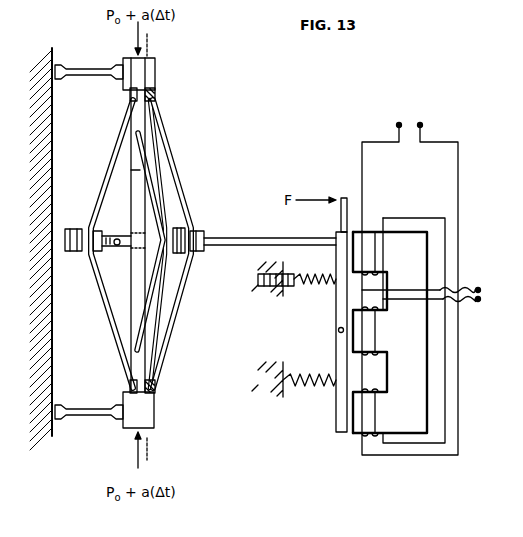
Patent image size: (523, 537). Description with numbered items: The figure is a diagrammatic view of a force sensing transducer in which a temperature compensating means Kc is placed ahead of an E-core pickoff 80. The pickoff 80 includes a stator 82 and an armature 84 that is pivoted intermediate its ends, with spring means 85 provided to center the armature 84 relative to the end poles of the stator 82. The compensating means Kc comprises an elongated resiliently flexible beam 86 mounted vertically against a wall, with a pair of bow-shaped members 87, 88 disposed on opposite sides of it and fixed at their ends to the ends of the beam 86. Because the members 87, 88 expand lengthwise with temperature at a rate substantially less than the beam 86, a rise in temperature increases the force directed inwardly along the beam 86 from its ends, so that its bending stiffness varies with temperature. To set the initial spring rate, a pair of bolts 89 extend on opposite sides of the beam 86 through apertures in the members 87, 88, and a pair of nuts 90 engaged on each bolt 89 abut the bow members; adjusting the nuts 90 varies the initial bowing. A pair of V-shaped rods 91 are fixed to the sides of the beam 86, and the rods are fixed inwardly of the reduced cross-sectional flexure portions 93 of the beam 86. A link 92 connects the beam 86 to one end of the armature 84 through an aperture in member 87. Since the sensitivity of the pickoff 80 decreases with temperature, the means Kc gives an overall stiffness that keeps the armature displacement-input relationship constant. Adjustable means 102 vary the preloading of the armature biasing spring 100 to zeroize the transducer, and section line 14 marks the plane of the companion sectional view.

The section line 14- 14 is at (152, 45).
The E-core pickoff 80 is at (326, 321).
The stator 82 is at (427, 274).
The armature 84 is at (336, 355).
The spring means 85 is at (322, 394).
The beam 86 is at (148, 126).
The bow-shaped member 87 is at (171, 322).
The bow-shaped member 88 is at (104, 326).
The bolt 89 is at (120, 248).
The nut 90 is at (82, 226).
The V-shaped rod 91 is at (156, 296).
The link 92 is at (248, 234).
The flexure portion 93 is at (129, 94).
The armature biasing spring 100 is at (304, 283).
The adjustable means 102 is at (268, 292).
The temperature compensating means Kc is at (188, 163).